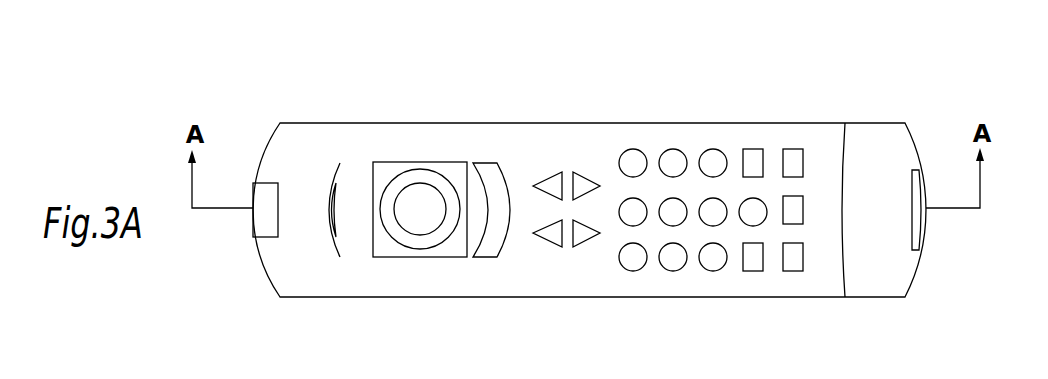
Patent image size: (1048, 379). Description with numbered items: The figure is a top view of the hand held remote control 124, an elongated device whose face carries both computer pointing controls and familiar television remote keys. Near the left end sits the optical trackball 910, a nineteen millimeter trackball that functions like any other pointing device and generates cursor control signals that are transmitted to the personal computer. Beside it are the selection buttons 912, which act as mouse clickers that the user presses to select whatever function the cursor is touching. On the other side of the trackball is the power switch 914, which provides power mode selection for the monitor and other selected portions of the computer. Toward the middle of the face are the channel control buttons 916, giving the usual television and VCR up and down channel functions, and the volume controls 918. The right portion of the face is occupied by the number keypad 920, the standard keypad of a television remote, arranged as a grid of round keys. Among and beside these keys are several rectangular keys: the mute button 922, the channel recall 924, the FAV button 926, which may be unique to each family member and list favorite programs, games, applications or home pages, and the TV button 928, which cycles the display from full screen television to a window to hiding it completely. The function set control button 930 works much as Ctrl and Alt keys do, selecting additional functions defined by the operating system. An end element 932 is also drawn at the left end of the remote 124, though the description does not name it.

The hand held remote control 124 is at (960, 90).
The optical trackball 910 is at (420, 190).
The selection buttons 912 is at (483, 170).
The power switch 914 is at (336, 190).
The channel control buttons 916 is at (580, 172).
The volume controls 918 is at (580, 245).
The number keypad 920 is at (683, 125).
The mute button 922 is at (751, 271).
The channel recall 924 is at (753, 149).
The FAV button 926 is at (791, 271).
The TV button 928 is at (803, 213).
The function set control button 930 is at (793, 149).
The end button 932 is at (262, 226).